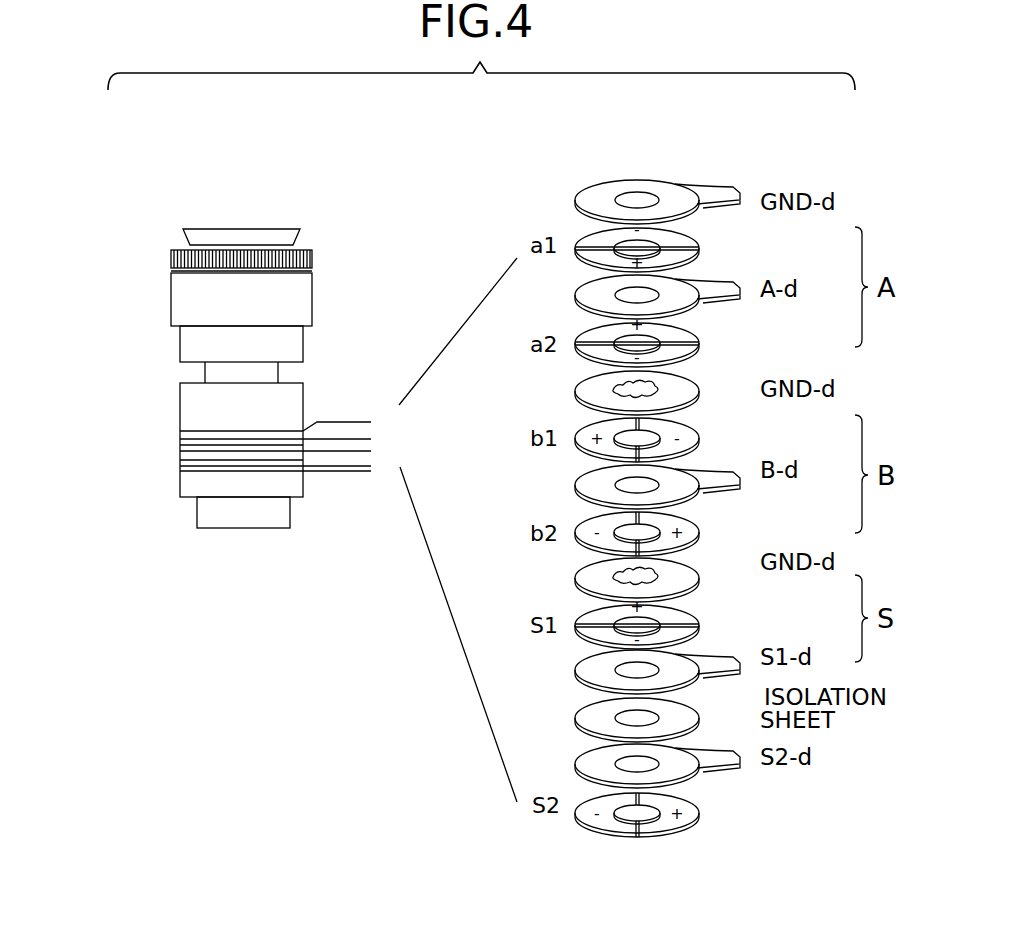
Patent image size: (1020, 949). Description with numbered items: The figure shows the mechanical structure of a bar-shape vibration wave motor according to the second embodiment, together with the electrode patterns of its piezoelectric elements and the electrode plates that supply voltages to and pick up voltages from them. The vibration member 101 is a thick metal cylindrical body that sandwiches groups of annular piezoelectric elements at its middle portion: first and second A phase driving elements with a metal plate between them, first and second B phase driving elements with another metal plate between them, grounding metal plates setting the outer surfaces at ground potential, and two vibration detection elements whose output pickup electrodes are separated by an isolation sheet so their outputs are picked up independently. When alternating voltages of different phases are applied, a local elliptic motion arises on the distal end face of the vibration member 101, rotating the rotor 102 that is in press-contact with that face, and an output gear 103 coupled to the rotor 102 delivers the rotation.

The vibration member 101 is at (136, 332).
The rotary member (rotor) 102 is at (136, 270).
The output gear 103 is at (160, 259).